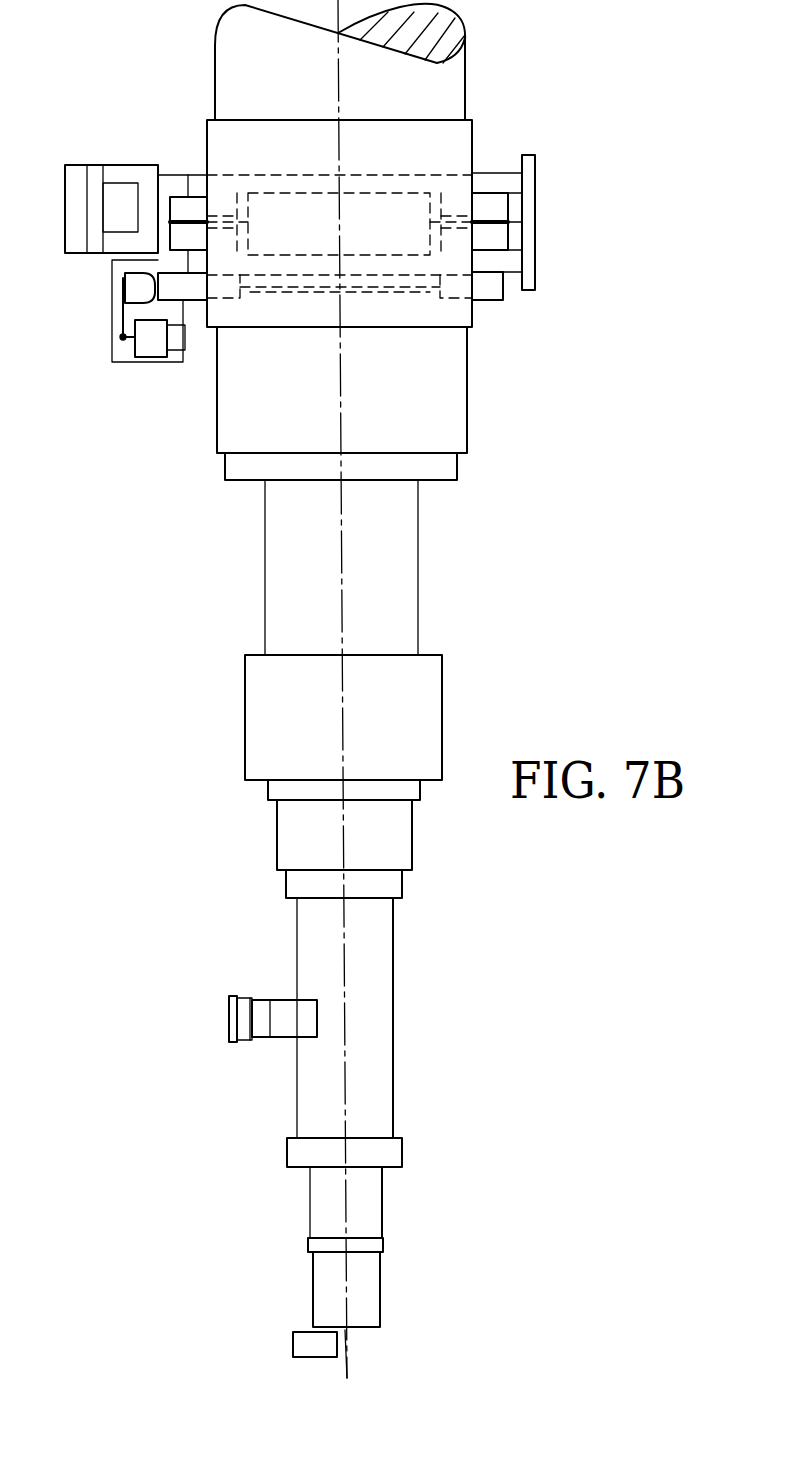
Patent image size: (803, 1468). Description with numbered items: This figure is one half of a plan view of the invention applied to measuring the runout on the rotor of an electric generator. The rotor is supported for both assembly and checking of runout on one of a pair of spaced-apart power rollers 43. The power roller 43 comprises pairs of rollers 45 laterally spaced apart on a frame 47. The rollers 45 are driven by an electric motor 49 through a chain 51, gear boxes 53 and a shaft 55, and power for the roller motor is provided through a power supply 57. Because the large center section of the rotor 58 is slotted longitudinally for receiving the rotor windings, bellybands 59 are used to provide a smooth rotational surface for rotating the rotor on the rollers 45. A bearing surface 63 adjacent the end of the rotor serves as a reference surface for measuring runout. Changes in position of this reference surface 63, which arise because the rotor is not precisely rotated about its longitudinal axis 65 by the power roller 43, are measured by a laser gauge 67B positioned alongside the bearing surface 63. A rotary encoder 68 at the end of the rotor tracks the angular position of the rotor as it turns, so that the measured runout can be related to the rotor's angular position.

The power roller 43 is at (548, 260).
The rollers 45 is at (175, 238).
The frame 47 is at (512, 160).
The electric motor 49 is at (155, 355).
The chain 51 is at (122, 315).
The gear boxes 53 is at (135, 286).
The shaft 55 is at (318, 308).
The power supply 57 is at (108, 165).
The center section of the rotor 58 is at (228, 58).
The bellybands 59 is at (408, 130).
The bearing surface 63 is at (393, 1025).
The longitudinal axis 65 is at (348, 1360).
The laser gauge 67B is at (255, 1000).
The rotary encoder 68 is at (293, 1342).